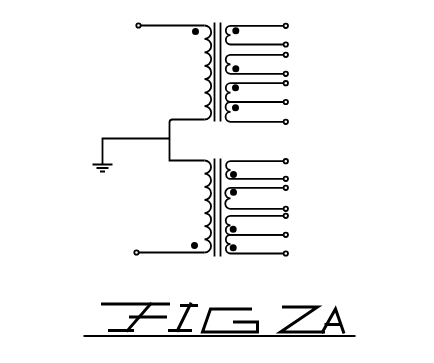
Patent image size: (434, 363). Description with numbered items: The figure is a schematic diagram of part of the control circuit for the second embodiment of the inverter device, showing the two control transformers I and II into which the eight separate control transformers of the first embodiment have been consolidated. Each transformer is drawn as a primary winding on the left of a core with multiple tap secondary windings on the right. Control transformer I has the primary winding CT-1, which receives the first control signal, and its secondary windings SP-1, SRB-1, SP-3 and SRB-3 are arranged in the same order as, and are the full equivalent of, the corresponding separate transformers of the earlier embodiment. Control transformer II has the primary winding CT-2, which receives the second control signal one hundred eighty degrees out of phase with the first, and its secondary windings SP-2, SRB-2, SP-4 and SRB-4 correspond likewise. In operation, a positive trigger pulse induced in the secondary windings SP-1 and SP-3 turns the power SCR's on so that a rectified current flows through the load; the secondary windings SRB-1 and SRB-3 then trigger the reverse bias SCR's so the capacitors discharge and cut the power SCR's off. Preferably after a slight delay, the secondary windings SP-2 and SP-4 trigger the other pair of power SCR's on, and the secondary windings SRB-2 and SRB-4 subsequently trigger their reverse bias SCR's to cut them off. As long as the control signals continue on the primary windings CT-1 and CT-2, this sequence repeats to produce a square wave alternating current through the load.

The primary winding CT-1 is at (145, 91).
The primary winding CT-2 is at (139, 208).
The secondary winding SP-1 is at (281, 35).
The secondary winding SRB-1 is at (283, 64).
The secondary winding SP-3 is at (280, 92).
The secondary winding SRB-3 is at (283, 113).
The secondary winding SP-2 is at (279, 170).
The secondary winding SRB-2 is at (283, 198).
The secondary winding SP-4 is at (279, 225).
The secondary winding SRB-4 is at (283, 245).